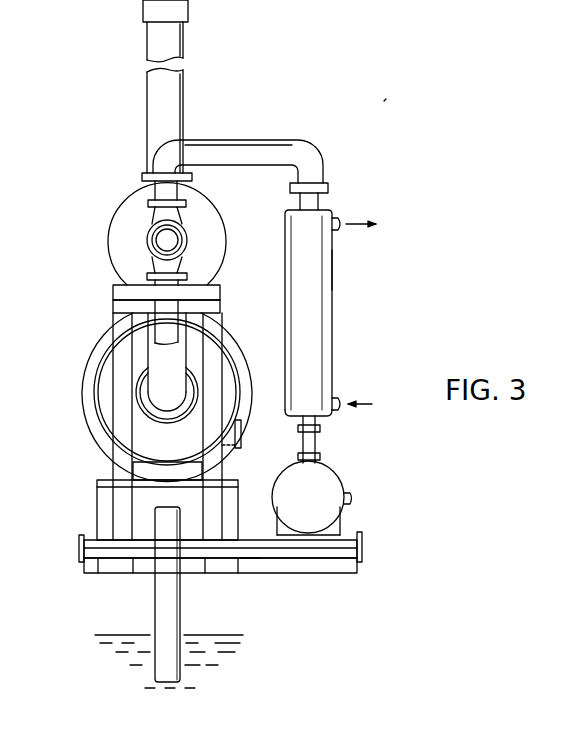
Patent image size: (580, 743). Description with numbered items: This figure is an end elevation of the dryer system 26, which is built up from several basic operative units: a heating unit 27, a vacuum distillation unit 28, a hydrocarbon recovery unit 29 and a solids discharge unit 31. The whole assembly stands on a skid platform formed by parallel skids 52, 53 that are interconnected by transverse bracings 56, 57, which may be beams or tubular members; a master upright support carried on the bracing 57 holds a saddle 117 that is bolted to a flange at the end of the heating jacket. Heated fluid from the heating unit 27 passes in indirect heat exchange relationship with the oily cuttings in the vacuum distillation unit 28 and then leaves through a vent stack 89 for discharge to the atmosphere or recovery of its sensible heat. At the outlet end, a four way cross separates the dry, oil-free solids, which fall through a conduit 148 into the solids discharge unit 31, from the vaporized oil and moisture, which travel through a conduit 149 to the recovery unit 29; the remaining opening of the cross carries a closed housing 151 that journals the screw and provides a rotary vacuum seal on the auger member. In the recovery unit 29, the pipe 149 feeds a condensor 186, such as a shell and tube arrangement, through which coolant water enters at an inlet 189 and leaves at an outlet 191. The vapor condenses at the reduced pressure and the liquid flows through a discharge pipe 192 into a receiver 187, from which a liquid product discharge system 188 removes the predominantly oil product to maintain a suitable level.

The dryer system 26 is at (384, 101).
The heating unit 27 is at (95, 428).
The vacuum distillation unit 28 is at (211, 233).
The hydrocarbon recovery unit 29 is at (320, 325).
The solids discharge unit 31 is at (170, 324).
The skid 52 is at (95, 576).
The skid 53 is at (330, 573).
The transverse bracing 56 is at (363, 546).
The transverse bracing 57 is at (232, 573).
The vent stack 89 is at (147, 50).
The saddle 117 is at (113, 289).
The conduit 148 is at (158, 305).
The conduit 149 is at (272, 143).
The closed housing 151 is at (148, 232).
The condensor 186 is at (334, 265).
The receiver 187 is at (336, 492).
The liquid product discharge system 188 is at (352, 499).
The inlet 189 is at (340, 399).
The outlet 191 is at (338, 218).
The discharge pipe 192 is at (318, 421).